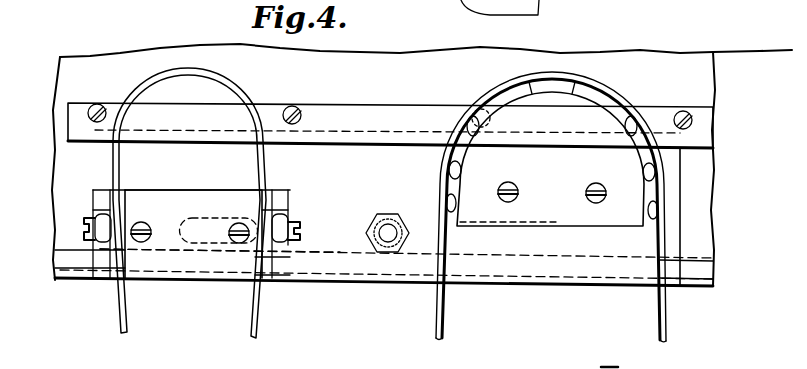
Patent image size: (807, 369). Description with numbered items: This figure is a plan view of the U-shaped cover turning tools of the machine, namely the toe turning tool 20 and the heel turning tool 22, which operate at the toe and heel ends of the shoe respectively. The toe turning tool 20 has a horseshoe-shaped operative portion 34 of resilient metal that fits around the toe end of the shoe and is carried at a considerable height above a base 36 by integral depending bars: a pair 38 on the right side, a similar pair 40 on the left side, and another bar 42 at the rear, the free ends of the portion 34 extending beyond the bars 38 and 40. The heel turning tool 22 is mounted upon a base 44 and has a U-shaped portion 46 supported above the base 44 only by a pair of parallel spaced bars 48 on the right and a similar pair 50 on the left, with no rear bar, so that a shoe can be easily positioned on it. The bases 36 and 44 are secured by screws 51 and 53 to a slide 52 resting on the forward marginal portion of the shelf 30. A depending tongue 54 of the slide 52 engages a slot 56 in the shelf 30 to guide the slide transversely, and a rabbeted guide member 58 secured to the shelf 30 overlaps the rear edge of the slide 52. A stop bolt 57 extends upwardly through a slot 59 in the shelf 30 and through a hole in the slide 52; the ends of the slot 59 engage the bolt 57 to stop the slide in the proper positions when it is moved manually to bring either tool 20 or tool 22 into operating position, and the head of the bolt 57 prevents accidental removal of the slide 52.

The toe turning tool 20 is at (614, 82).
The heel turning tool 22 is at (129, 80).
The shelf 30 is at (402, 58).
The U-shaped operative portion 34 is at (629, 123).
The base 36 is at (583, 217).
The pair of bars 38 is at (627, 172).
The pair of bars 40 is at (460, 168).
The bar 42 is at (552, 87).
The base 44 is at (142, 200).
The U-shaped portion 46 is at (217, 77).
The pair of bars 48 is at (296, 232).
The pair of bars 50 is at (100, 250).
The screws 51 is at (591, 188).
The slide 52 is at (305, 162).
The screws 53 is at (237, 225).
The tongue 54 is at (326, 272).
The slot 56 is at (77, 257).
The stop bolt 57 is at (384, 246).
The rabbeted guide member 58 is at (405, 112).
The slot 59 is at (336, 225).